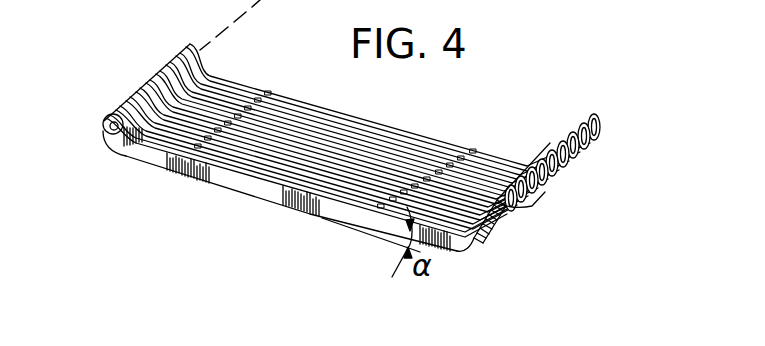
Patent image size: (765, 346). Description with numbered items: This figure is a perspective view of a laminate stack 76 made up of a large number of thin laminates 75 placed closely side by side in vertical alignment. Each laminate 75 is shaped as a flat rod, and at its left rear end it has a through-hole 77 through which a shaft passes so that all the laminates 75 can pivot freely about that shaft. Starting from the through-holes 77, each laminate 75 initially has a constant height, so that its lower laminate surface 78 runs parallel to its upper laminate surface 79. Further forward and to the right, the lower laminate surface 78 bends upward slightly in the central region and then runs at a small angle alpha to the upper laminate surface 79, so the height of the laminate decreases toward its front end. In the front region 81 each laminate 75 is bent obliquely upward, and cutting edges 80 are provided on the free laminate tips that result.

The laminate 75 is at (145, 152).
The laminate stack 76 is at (281, 94).
The through-hole 77 is at (104, 128).
The lower laminate surface 78 is at (172, 177).
The upper laminate surface 79 is at (260, 168).
The cutting edge 80 is at (540, 180).
The front region 81 is at (493, 207).